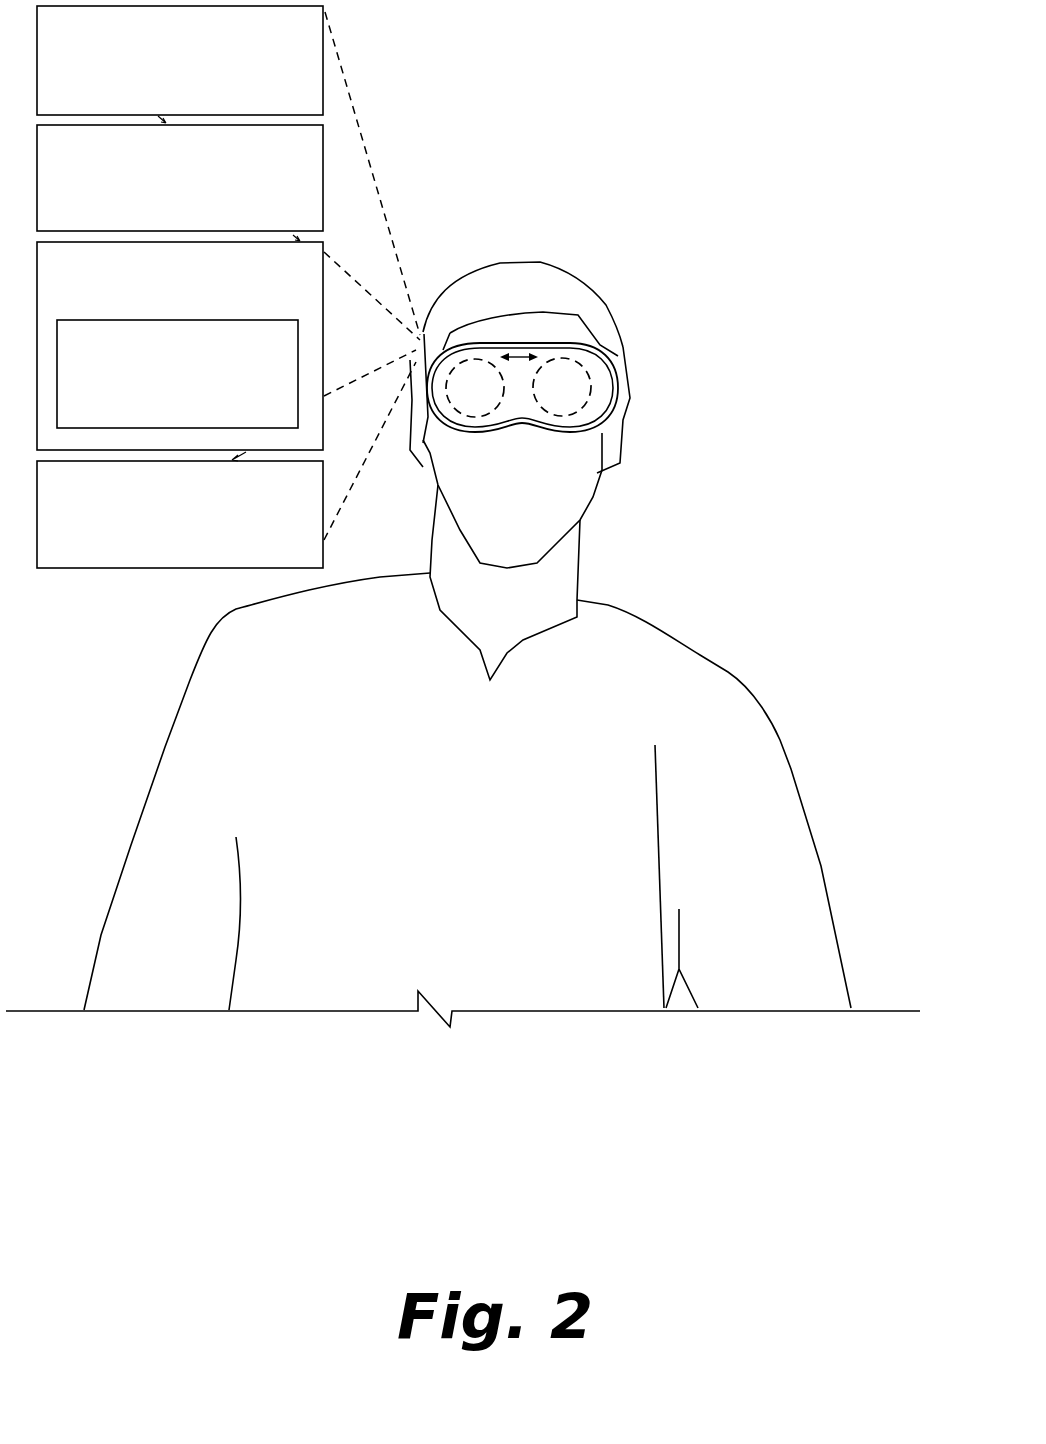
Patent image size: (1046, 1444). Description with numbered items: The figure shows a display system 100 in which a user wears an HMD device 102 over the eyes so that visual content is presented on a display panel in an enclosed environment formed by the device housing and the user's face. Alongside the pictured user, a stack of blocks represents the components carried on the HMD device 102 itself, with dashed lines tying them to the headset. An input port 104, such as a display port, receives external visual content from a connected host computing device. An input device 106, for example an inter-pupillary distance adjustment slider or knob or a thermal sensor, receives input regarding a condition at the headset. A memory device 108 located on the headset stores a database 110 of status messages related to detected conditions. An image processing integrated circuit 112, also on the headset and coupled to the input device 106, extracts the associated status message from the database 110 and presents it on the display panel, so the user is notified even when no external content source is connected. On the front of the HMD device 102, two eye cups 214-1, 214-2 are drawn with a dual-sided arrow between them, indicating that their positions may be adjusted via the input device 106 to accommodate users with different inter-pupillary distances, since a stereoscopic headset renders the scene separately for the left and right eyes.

The display system 100 is at (565, 198).
The HMD device 102 is at (603, 377).
The input port 104 is at (163, 82).
The input device 106 is at (163, 200).
The memory device 108 is at (163, 299).
The database 110 is at (161, 397).
The image processing integrated circuit 112 is at (163, 551).
The eye cup 214-1 is at (476, 385).
The eye cup 214-2 is at (577, 397).